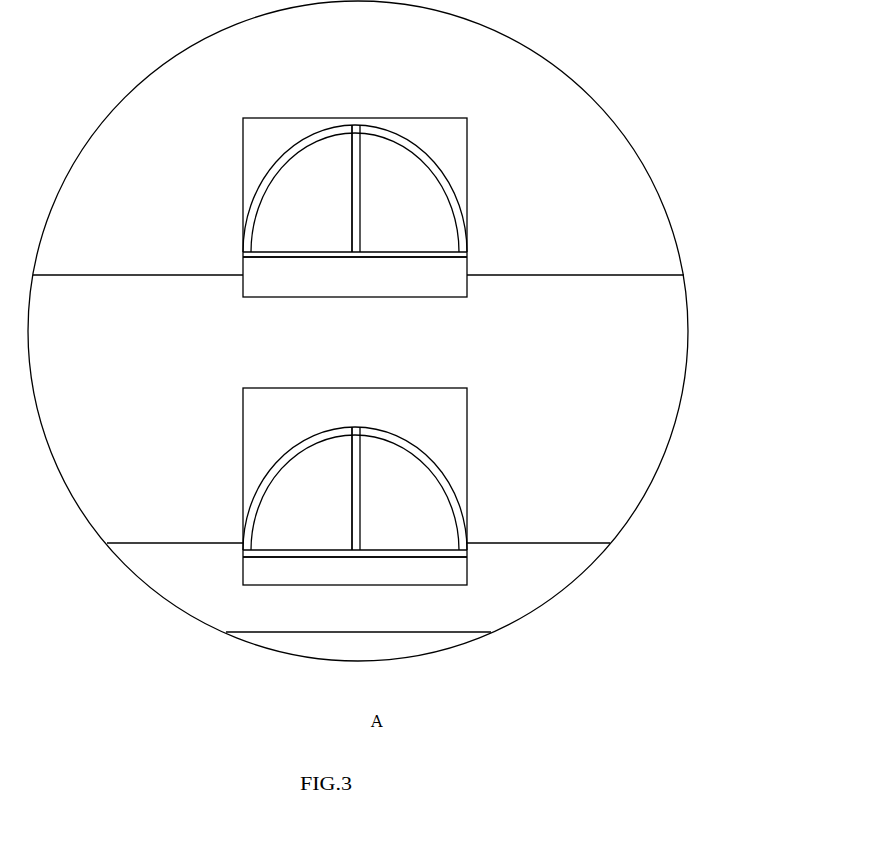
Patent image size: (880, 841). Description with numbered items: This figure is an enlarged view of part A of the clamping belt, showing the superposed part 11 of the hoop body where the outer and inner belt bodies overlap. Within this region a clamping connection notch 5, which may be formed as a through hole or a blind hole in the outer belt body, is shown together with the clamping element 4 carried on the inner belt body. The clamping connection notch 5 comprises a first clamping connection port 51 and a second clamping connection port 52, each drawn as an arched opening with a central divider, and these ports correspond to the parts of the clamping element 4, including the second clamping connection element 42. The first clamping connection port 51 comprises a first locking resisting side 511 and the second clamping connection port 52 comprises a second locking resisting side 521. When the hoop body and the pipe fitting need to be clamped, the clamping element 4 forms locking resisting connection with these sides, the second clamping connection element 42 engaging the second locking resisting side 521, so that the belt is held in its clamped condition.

The clamping element 4 is at (50, 497).
The clamping connection notch 5 is at (705, 647).
The superposed part 11 is at (313, 223).
The second clamping connection element 42 is at (202, 488).
The first clamping connection port 51 is at (322, 282).
The first locking resisting side 511 is at (380, 295).
The second clamping connection port 52 is at (387, 577).
The second locking resisting side 521 is at (462, 592).